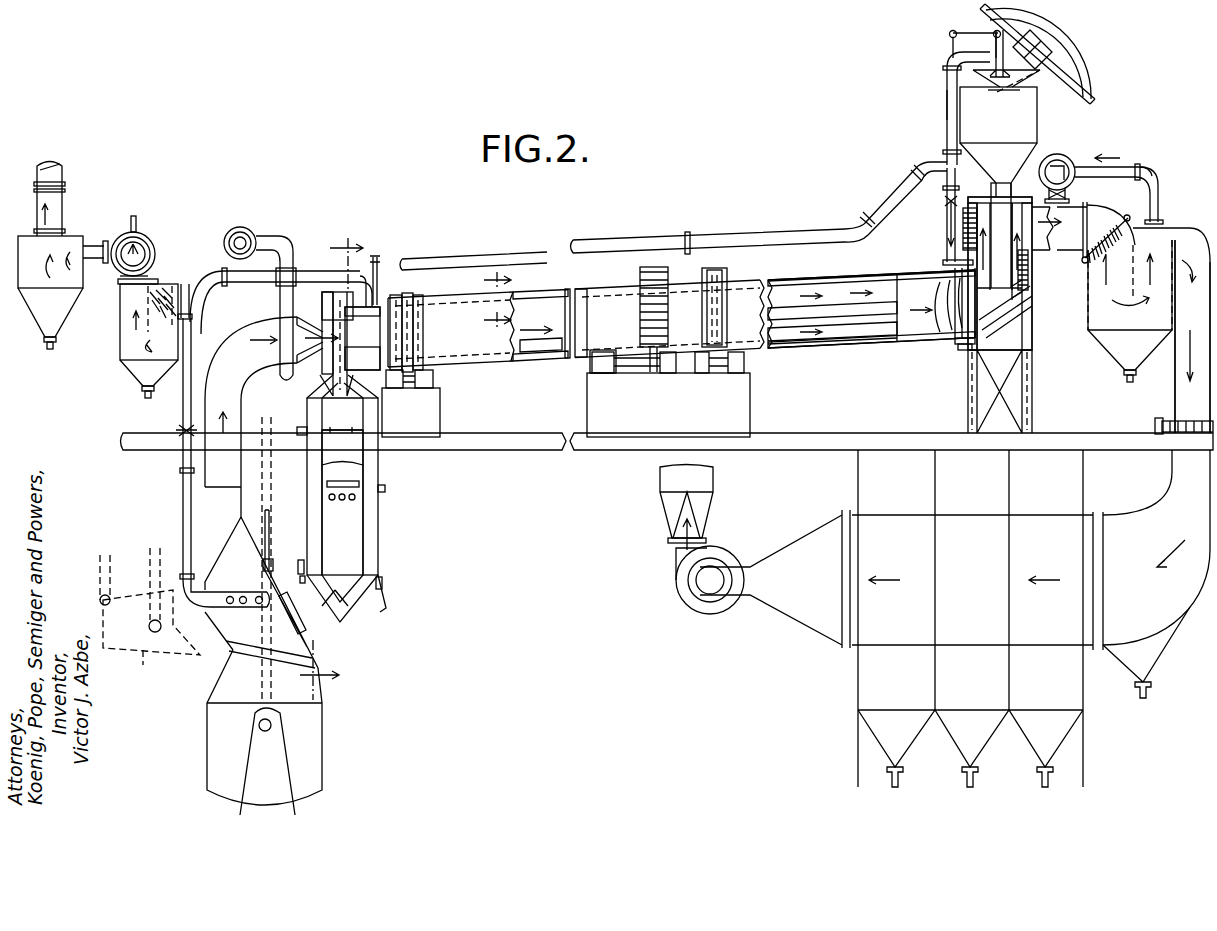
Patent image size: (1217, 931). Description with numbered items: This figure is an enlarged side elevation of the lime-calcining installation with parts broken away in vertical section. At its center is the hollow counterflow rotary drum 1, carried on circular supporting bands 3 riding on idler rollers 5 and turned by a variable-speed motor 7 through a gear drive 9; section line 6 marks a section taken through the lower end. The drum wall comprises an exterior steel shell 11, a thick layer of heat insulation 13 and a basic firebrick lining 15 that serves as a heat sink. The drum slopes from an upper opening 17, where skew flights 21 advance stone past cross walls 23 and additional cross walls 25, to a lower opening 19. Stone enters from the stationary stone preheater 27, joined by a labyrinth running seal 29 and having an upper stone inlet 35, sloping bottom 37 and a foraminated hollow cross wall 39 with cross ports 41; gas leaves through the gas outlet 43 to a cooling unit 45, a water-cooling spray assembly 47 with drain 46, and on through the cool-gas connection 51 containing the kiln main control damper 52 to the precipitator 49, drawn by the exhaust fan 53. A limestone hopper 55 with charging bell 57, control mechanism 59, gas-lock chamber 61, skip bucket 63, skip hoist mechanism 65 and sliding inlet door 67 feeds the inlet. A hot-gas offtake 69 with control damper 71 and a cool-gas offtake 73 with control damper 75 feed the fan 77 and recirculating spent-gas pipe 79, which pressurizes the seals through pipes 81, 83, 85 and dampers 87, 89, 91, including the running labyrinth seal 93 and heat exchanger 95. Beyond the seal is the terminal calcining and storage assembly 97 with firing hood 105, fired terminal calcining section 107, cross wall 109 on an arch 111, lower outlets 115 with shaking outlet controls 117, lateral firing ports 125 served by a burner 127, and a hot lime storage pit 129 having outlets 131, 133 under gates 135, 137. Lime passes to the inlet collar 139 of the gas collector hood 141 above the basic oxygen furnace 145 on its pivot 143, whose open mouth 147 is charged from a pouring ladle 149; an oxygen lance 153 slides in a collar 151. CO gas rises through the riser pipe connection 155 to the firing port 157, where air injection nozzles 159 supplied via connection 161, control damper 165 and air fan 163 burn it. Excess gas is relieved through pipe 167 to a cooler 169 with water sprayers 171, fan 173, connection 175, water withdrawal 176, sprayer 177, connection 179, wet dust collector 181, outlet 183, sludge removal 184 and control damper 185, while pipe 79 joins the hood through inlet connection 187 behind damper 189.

The rotary drum 1 is at (492, 354).
The circular supporting bands 3 is at (414, 320).
The idler rollers 5 is at (408, 390).
The section line 6 is at (331, 463).
The variable-speed motor 7 is at (596, 362).
The gear drive 9 is at (652, 382).
The exterior steel shell 11 is at (826, 349).
The heat insulation 13 is at (826, 278).
The basic firebrick lining 15 is at (792, 280).
The upper opening 17 is at (1006, 304).
The lower opening 19 is at (368, 306).
The skew flights 21 is at (945, 322).
The cross walls 23 is at (905, 274).
The additional cross walls 25 is at (590, 289).
The stationary stone preheater 27 is at (1052, 266).
The labyrinth running seal 29 is at (960, 350).
The upper stone inlet 35 is at (1000, 178).
The sloping bottom 37 is at (1032, 344).
The foraminated hollow cross wall 39 is at (1013, 238).
The cross ports 41 is at (1012, 290).
The gas outlet 43 is at (1068, 232).
The cooling unit 45 is at (1110, 336).
The hopper outlet valve 46 is at (1124, 375).
The water-cooling spray assembly 47 is at (1140, 242).
The electrostatic dust-collecting precipitator 49 is at (972, 590).
The cool-gas connection 51 is at (1200, 232).
The kiln main control damper 52 is at (1170, 421).
The exhaust fan 53 is at (712, 596).
The limestone hopper 55 is at (1006, 128).
The charging bell 57 is at (1032, 90).
The control mechanism 59 is at (955, 30).
The gas-lock chamber 61 is at (1014, 60).
The skip bucket 63 is at (1050, 12).
The skip hoist mechanism 65 is at (1088, 55).
The sliding inlet door 67 is at (1046, 44).
The hot-gas offtake 69 is at (1050, 190).
The control damper 71 is at (1067, 194).
The cool-gas offtake 73 is at (1147, 170).
The control damper 75 is at (1092, 165).
The fan 77 is at (1057, 154).
The recirculating spent-gas pipe 79 is at (187, 414).
The pressurizing pipe 81 is at (946, 184).
The pressurizing pipe 83 is at (947, 126).
The pressurizing pipe 85 is at (362, 250).
The damper 87 is at (945, 205).
The damper 89 is at (947, 100).
The damper 91 is at (404, 262).
The running labyrinth seal 93 is at (411, 412).
The heat exchanger 95 is at (963, 238).
The terminal calcining and storage assembly 97 is at (388, 529).
The firing hood 105 is at (340, 288).
The fired terminal calcining section 107 is at (322, 403).
The cross wall 109 is at (322, 420).
The arch 111 is at (381, 493).
The lower outlets 115 is at (363, 464).
The shaking outlet control 117 is at (359, 484).
The lateral firing ports 125 is at (363, 432).
The premixing air and fuel burner 127 is at (308, 445).
The hot lime storage pit 129 is at (362, 552).
The lime outlet passage 131 is at (345, 604).
The excess lime outlet 133 is at (385, 606).
The gate 135 is at (298, 569).
The gate 137 is at (392, 586).
The inlet collar 139 is at (306, 628).
The gas collector hood 141 is at (261, 592).
The pivot 143 is at (266, 735).
The basic oxygen furnace 145 is at (344, 735).
The open mouth 147 is at (246, 660).
The pouring ladle 149 is at (150, 621).
The collar 151 is at (263, 563).
The oxygen lance 153 is at (270, 520).
The riser pipe connection 155 is at (208, 482).
The firing port 157 is at (320, 386).
The air injection nozzles 159 is at (313, 318).
The air connection 161 is at (287, 252).
The air fan 163 is at (237, 228).
The control damper 165 is at (278, 284).
The branch outlet relief pipe 167 is at (214, 284).
The cooler 169 is at (126, 347).
The water sprayers 171 is at (183, 282).
The fan 173 is at (129, 232).
The connection 175 is at (128, 270).
The water withdrawal 176 is at (143, 392).
The water sprayer 177 is at (138, 222).
The fan outlet connection 179 is at (100, 240).
The wet dust collector 181 is at (40, 240).
The outlet 183 is at (62, 203).
The sludge removal 184 is at (58, 342).
The control damper 185 is at (40, 172).
The inlet connection 187 is at (222, 609).
The damper 189 is at (179, 430).